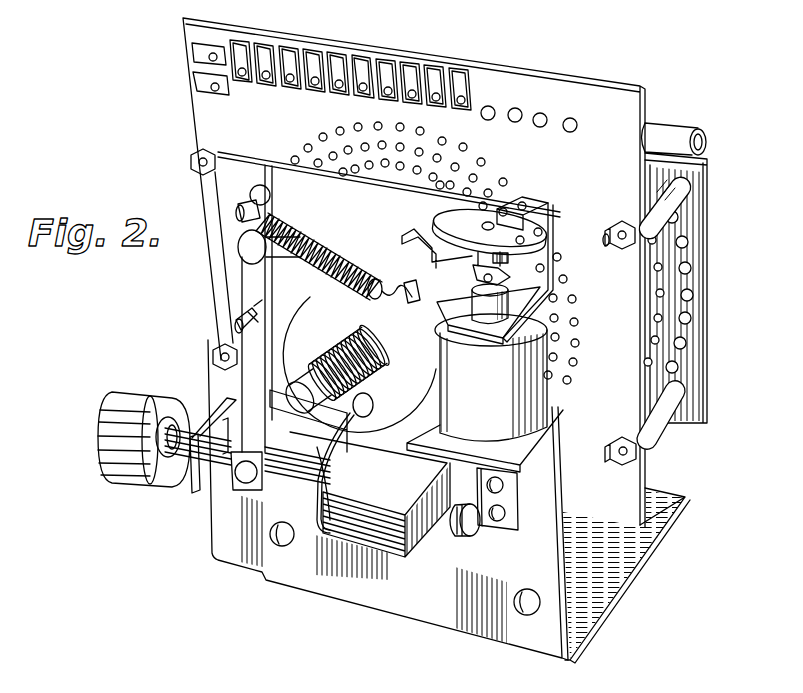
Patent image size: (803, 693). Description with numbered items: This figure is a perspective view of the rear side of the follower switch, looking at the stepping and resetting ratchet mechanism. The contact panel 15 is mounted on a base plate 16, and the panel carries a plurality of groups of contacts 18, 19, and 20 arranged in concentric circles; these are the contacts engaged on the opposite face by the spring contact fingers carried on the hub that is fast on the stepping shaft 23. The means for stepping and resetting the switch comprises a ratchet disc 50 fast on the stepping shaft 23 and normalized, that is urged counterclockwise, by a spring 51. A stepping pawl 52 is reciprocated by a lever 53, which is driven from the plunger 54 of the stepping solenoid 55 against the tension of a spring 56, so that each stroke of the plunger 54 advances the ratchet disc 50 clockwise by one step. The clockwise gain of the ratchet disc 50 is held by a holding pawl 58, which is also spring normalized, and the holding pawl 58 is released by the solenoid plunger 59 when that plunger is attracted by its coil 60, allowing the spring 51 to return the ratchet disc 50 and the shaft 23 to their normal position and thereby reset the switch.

The contact panel 15 is at (586, 183).
The base plate 16 is at (602, 577).
The contacts 18 is at (467, 146).
The contacts 19 is at (459, 168).
The contacts 20 is at (444, 186).
The stepping shaft 23 is at (298, 408).
The ratchet disc 50 is at (392, 374).
The spring 51 is at (374, 390).
The stepping pawl 52 is at (332, 238).
The lever 53 is at (250, 372).
The plunger 54 is at (297, 477).
The stepping solenoid 55 is at (370, 483).
The spring 56 is at (332, 278).
The holding pawl 58 is at (400, 234).
The solenoid plunger 59 is at (472, 306).
The coil 60 is at (468, 403).